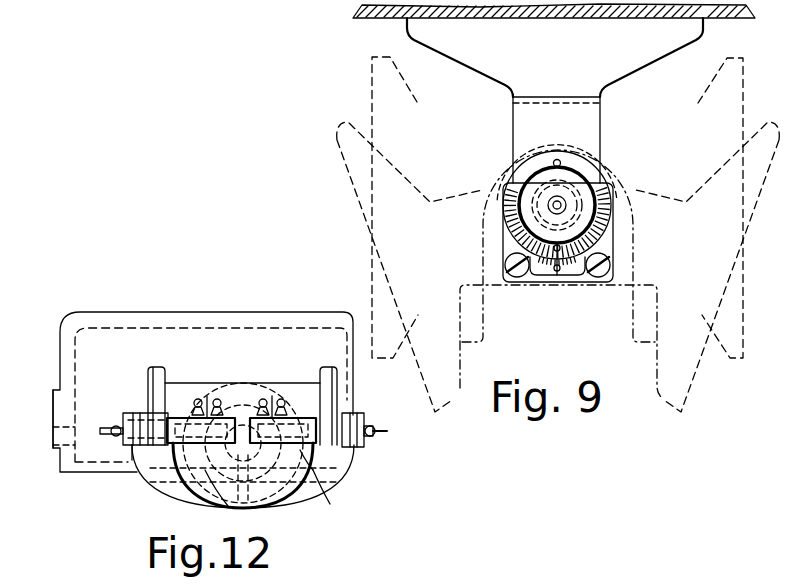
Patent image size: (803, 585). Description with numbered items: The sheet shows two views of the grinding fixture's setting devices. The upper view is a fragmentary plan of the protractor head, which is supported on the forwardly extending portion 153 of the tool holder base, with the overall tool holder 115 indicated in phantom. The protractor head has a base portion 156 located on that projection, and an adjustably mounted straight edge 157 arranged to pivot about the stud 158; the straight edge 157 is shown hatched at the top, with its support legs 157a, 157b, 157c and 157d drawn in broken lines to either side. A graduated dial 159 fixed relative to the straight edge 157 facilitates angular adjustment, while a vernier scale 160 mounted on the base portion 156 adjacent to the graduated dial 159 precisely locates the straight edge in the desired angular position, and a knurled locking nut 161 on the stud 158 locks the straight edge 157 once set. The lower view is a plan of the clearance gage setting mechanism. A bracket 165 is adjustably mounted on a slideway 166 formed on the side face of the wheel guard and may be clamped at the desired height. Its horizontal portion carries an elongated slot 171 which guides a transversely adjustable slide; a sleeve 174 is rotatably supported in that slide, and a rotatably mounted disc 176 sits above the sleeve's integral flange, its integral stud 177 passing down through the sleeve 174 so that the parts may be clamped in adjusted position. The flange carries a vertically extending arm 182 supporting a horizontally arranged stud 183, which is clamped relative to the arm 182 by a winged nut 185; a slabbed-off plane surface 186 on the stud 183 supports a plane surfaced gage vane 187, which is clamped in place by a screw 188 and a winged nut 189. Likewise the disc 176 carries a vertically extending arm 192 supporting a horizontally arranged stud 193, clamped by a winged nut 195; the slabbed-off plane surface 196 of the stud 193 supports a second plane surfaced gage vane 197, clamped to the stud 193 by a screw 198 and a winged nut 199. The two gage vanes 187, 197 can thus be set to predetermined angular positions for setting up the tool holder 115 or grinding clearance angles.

In FIG. 9, the straight edge 157 is at (407, 28).
In FIG. 9, the bracket leg 157a is at (372, 90).
In FIG. 9, the bracket leg 157b is at (337, 140).
In FIG. 9, the bracket leg 157c is at (743, 88).
In FIG. 9, the bracket leg 157d is at (746, 215).
In FIG. 9, the forwardly extending portion 153 is at (483, 253).
In FIG. 9, the tool holder 115 is at (462, 378).
In FIG. 9, the graduated dial 159 is at (612, 200).
In FIG. 9, the knurled locking nut 161 is at (527, 205).
In FIG. 9, the stud 158 is at (552, 200).
In FIG. 9, the base portion 156 is at (530, 272).
In FIG. 9, the vernier scale 160 is at (557, 275).
In FIG. 12, the bracket 165 is at (75, 470).
In FIG. 12, the slideway 166 is at (53, 410).
In FIG. 12, the gage vane 197 is at (180, 458).
In FIG. 12, the slabbed-off plane surface 196 is at (146, 467).
In FIG. 12, the disc 176 is at (276, 488).
In FIG. 12, the sleeve 174 is at (230, 470).
In FIG. 12, the stud 177 is at (245, 462).
In FIG. 12, the gage vane 187 is at (310, 488).
In FIG. 12, the slabbed-off plane surface 186 is at (305, 452).
In FIG. 12, the elongated slot 171 is at (333, 460).
In FIG. 12, the vertically extending arm 192 is at (148, 372).
In FIG. 12, the vertically extending arm 182 is at (324, 372).
In FIG. 12, the stud 193 is at (141, 418).
In FIG. 12, the winged nut 195 is at (111, 437).
In FIG. 12, the stud 183 is at (351, 418).
In FIG. 12, the winged nut 185 is at (387, 432).
In FIG. 12, the screw 198 is at (200, 400).
In FIG. 12, the winged nut 199 is at (205, 398).
In FIG. 12, the screw 188 is at (264, 400).
In FIG. 12, the winged nut 189 is at (283, 402).